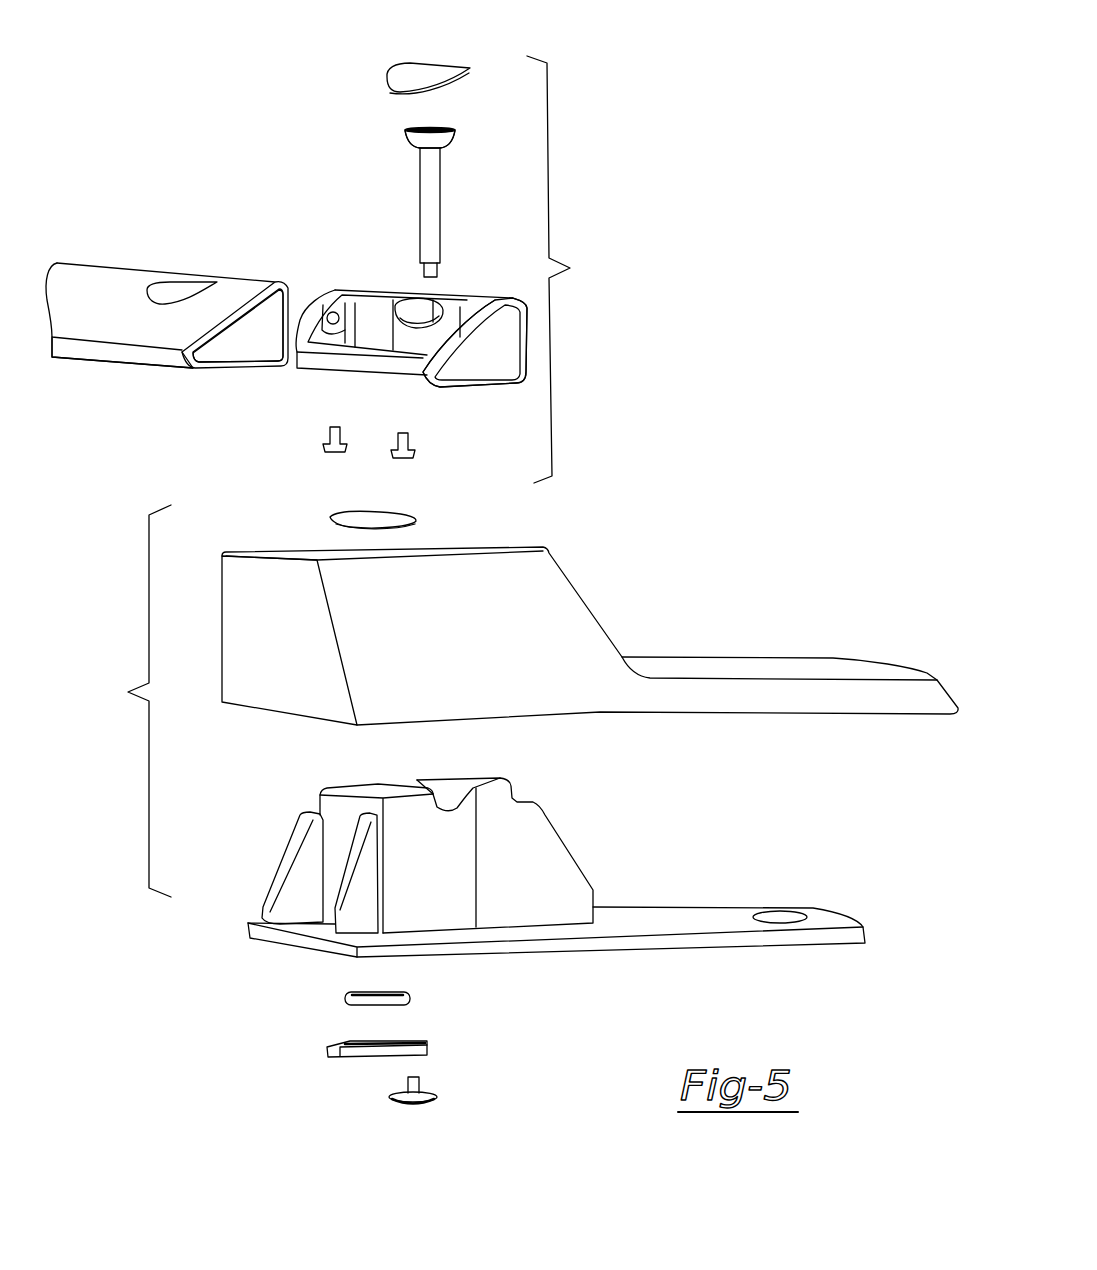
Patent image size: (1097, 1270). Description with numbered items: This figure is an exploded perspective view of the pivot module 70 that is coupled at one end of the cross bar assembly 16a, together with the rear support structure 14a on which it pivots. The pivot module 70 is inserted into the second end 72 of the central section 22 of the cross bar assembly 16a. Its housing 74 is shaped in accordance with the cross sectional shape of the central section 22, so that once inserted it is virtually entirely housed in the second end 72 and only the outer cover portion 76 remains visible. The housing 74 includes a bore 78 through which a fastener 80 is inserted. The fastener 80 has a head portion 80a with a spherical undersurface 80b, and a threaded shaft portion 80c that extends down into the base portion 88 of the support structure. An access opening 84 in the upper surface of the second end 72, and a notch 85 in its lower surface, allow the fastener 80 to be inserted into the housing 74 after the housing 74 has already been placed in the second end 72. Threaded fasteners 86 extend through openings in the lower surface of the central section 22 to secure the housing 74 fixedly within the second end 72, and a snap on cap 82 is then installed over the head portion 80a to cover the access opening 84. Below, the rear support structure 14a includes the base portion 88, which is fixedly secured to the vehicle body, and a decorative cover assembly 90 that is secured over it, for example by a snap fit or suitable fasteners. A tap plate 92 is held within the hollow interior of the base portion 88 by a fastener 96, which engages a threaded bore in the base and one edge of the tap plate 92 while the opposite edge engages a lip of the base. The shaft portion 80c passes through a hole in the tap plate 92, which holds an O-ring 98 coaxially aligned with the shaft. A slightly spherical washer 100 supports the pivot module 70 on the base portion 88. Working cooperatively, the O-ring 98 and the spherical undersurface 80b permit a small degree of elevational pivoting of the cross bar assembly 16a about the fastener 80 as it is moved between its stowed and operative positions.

The rear support structure 14a is at (131, 701).
The cross bar assembly 16a is at (156, 222).
The central section 22 is at (88, 283).
The pivot module 70 is at (563, 269).
The second end 72 is at (152, 357).
The housing 74 is at (360, 287).
The outer cover portion 76 is at (482, 360).
The bore 78 is at (413, 317).
The fastener 80 is at (433, 188).
The head portion 80a is at (413, 130).
The spherical undersurface 80b is at (448, 142).
The shaft portion 80c is at (442, 210).
The snap on cap 82 is at (408, 72).
The access opening 84 is at (182, 288).
The notch 85 is at (245, 365).
The threaded fasteners 86 is at (400, 433).
The base portion 88 is at (568, 837).
The decorative cover assembly 90 is at (584, 586).
The tap plate 92 is at (420, 1043).
The fastener 96 is at (402, 1097).
The O-ring 98 is at (353, 995).
The spherical washer 100 is at (350, 517).